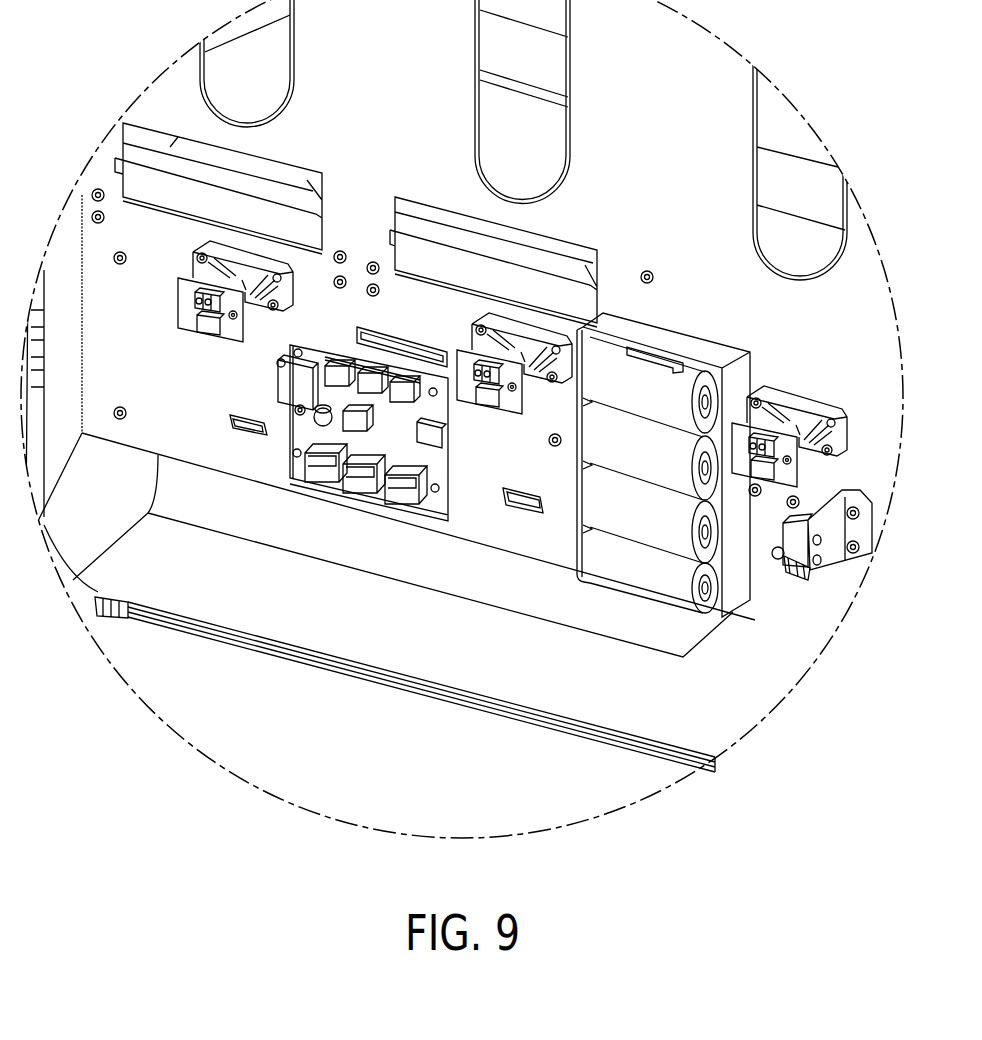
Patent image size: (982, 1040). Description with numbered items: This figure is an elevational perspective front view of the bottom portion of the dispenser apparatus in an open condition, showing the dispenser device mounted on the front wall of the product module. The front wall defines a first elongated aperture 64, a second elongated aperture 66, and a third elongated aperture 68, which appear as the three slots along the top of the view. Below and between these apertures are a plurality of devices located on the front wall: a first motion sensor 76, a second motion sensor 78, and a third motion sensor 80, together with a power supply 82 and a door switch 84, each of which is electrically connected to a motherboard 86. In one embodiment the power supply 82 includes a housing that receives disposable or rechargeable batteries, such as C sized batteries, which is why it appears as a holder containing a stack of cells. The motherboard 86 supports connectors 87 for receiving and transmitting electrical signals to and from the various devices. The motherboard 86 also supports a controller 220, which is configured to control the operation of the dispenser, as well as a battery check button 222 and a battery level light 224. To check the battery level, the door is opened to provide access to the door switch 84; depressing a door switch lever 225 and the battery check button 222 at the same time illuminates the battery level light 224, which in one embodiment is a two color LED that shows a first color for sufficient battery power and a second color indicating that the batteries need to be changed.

The first elongated aperture 64 is at (298, 98).
The second elongated aperture 66 is at (574, 131).
The third elongated aperture 68 is at (757, 90).
The first motion sensor 76 is at (217, 262).
The second motion sensor 78 is at (475, 322).
The third motion sensor 80 is at (760, 440).
The power supply 82 is at (648, 565).
The door switch 84 is at (810, 583).
The motherboard 86 is at (397, 440).
The connectors 87 is at (335, 365).
The controller 220 is at (352, 428).
The battery check button 222 is at (298, 408).
The battery level light 224 is at (313, 424).
The door switch lever 225 is at (790, 575).